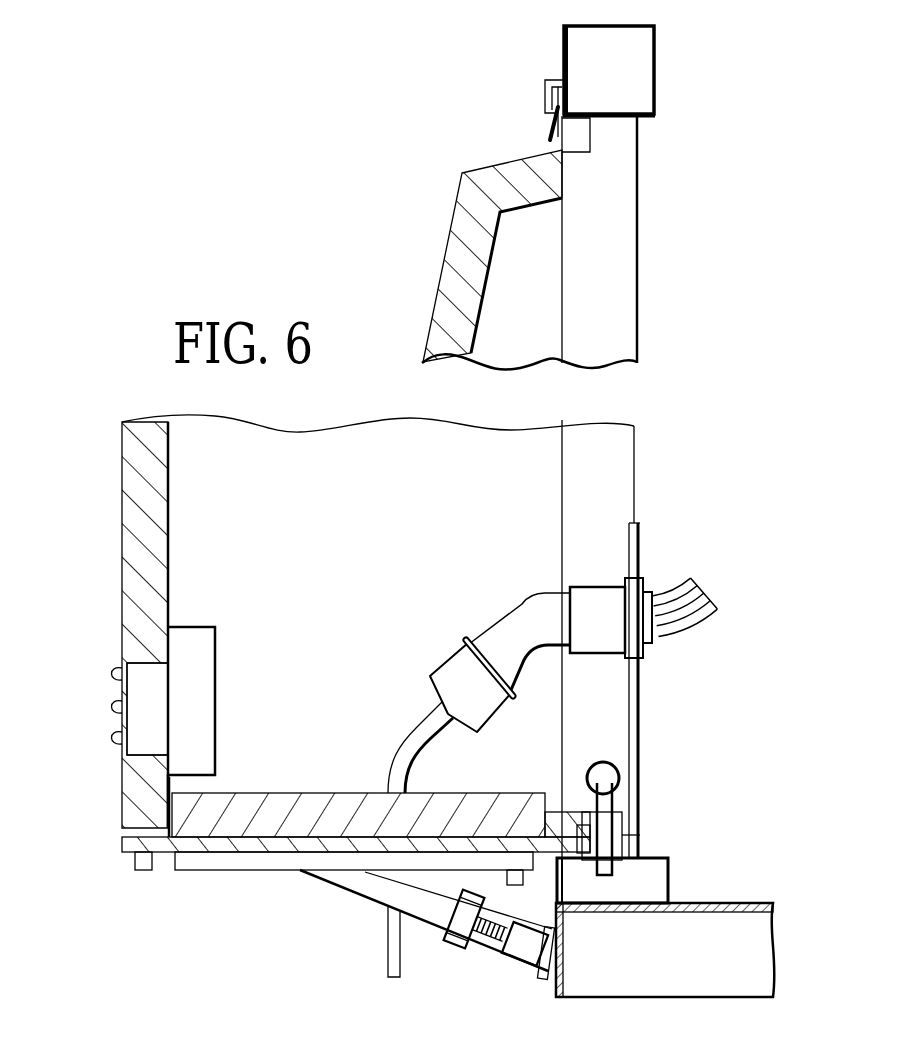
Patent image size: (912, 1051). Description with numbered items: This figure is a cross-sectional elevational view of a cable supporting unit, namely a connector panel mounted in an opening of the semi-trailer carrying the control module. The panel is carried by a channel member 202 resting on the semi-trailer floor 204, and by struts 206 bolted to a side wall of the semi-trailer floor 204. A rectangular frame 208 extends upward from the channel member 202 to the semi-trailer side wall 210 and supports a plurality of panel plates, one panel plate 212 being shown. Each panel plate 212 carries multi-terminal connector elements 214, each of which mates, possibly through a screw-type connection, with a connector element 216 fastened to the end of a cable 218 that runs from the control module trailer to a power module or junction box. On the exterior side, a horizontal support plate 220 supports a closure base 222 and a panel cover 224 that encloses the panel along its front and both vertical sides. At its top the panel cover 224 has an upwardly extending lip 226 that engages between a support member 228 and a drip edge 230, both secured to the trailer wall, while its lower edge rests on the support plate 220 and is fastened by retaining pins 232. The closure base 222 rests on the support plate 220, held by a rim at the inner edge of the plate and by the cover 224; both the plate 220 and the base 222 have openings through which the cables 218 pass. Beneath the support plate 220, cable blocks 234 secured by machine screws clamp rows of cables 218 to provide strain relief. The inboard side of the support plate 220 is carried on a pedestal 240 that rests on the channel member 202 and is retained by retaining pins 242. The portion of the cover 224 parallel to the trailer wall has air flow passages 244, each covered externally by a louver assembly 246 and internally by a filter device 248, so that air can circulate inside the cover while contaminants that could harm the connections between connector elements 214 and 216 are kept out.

The channel member 202 is at (669, 886).
The semi-trailer floor 204 is at (710, 903).
The struts 206 is at (518, 963).
The rectangular frame 208 is at (638, 352).
The semi-trailer side wall 210 is at (656, 84).
The panel plate 212 is at (641, 723).
The multi-terminal connector element 214 is at (643, 578).
The connector element 216 is at (598, 587).
The cable 218 is at (417, 726).
The horizontal support plate 220 is at (122, 844).
The closure base 222 is at (322, 790).
The panel cover 224 is at (430, 328).
The upwardly extending lip 226 is at (548, 143).
The support member 228 is at (590, 133).
The drip edge 230 is at (547, 134).
The retaining pins 232 is at (143, 871).
The cable block 234 is at (205, 876).
The pedestal 240 is at (638, 835).
The retaining pins 242 is at (598, 763).
The air flow passage 244 is at (152, 677).
The louver assembly 246 is at (120, 708).
The filter device 248 is at (216, 652).